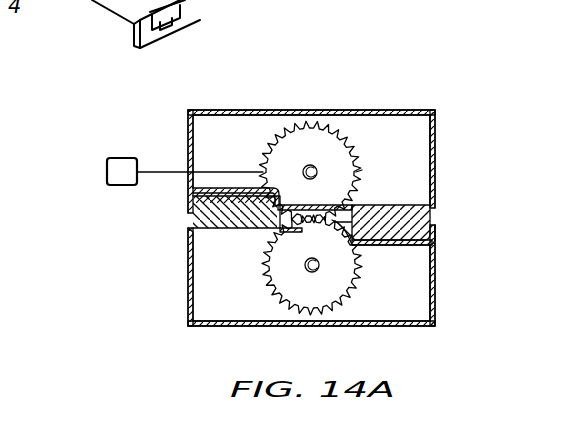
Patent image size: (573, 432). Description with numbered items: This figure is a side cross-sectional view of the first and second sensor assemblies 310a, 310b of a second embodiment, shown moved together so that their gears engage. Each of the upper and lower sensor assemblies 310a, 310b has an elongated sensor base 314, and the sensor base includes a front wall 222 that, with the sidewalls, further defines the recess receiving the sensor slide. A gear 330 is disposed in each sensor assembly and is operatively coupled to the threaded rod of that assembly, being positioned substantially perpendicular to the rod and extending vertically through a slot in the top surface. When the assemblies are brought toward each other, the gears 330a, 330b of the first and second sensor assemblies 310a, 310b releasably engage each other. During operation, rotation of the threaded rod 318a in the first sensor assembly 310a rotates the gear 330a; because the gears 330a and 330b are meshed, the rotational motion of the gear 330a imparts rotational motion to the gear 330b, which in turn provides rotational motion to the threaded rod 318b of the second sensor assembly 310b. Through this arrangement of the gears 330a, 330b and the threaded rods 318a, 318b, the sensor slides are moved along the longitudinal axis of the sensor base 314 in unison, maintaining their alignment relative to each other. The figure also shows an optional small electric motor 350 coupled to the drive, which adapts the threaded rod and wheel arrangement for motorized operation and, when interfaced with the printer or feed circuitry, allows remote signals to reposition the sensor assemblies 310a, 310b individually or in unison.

The first sensor assembly 310a is at (359, 86).
The second sensor assembly 310b is at (208, 340).
The sensor base 314 is at (443, 124).
The front wall 222 is at (437, 156).
The threaded rod 318a is at (349, 150).
The threaded rod 318b is at (304, 263).
The gear 330a is at (318, 167).
The gear 330b is at (350, 280).
The gear 330 is at (364, 172).
The electric motor 350 is at (106, 176).